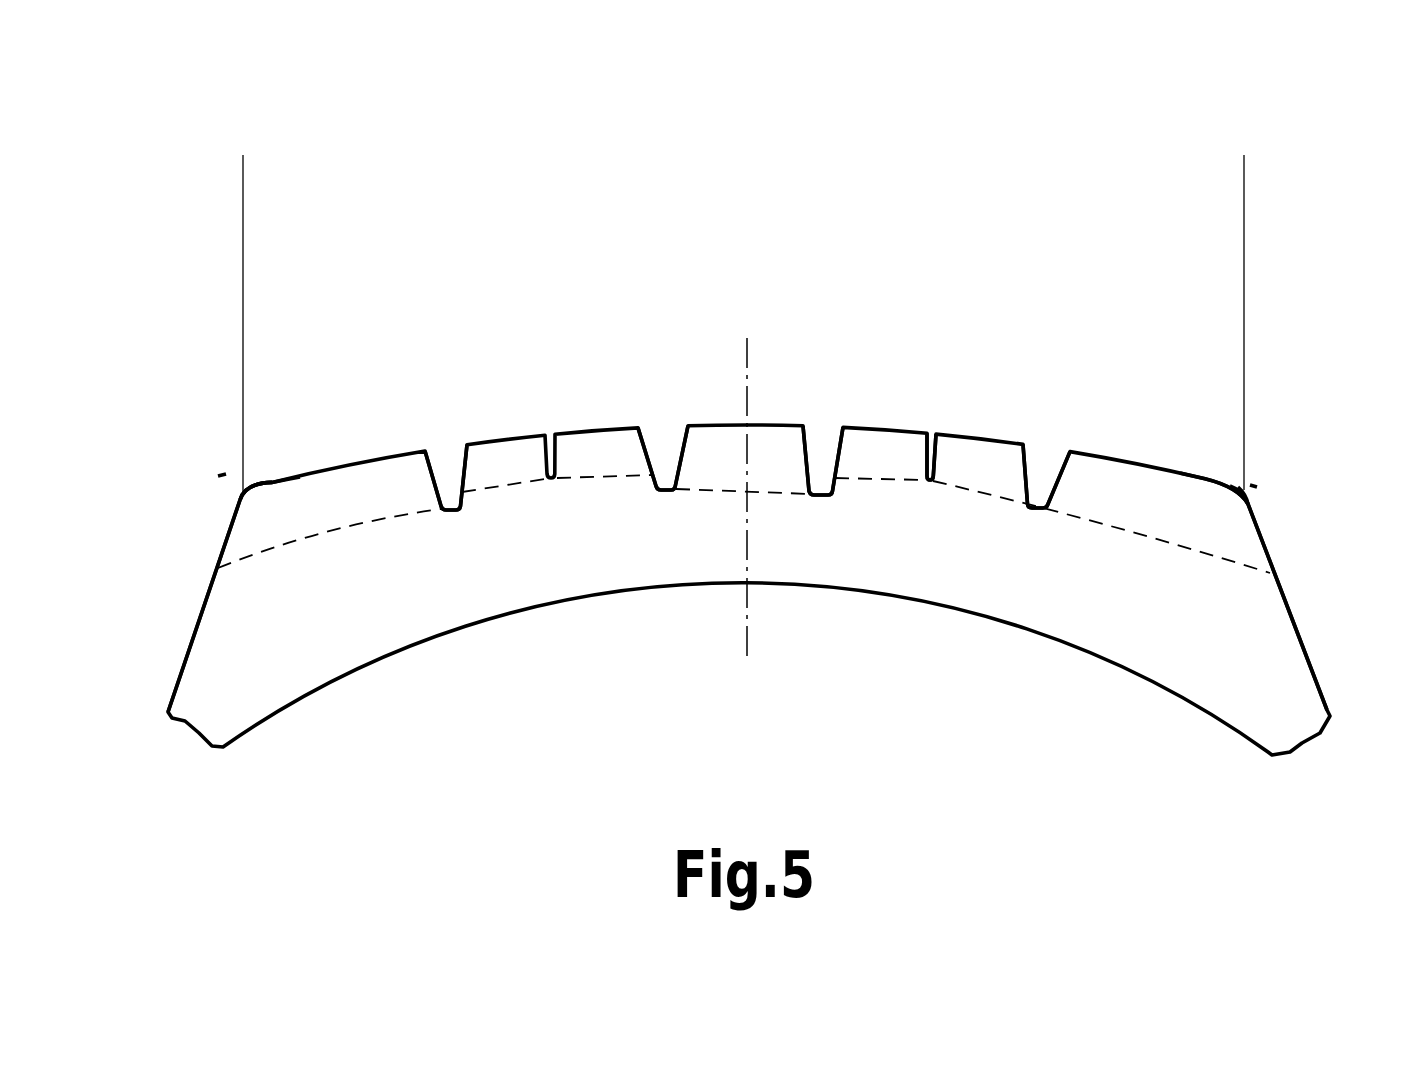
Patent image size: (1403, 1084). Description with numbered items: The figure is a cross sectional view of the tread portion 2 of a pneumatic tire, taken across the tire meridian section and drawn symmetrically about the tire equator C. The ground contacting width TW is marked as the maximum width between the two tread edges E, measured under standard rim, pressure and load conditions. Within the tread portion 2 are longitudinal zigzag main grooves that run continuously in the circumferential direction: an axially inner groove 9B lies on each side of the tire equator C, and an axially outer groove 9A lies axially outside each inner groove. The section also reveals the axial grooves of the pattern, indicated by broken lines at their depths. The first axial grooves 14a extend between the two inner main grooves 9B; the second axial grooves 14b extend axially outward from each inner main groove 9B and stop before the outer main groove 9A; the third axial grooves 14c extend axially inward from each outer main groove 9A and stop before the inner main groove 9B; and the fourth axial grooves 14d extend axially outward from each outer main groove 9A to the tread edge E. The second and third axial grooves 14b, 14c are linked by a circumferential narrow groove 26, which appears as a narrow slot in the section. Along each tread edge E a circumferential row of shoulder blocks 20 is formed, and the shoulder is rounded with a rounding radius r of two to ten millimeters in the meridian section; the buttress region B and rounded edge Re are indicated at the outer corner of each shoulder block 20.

The tread portion 2 is at (1108, 432).
The axially outer longitudinal main groove 9A is at (443, 447).
The axially inner longitudinal main groove 9B is at (663, 430).
The circumferential narrow groove 26 is at (931, 432).
The first axial groove 14a is at (708, 488).
The second axial groove 14b is at (594, 470).
The third axial groove 14c is at (496, 486).
The fourth axial groove 14d is at (326, 530).
The shoulder block 20 is at (278, 472).
The tread edge E is at (223, 473).
The rounded edge Re is at (242, 495).
The buttress portion B is at (223, 537).
The rounding radius r is at (1247, 505).
The ground contacting width TW is at (1244, 165).
The tire equator C is at (743, 521).